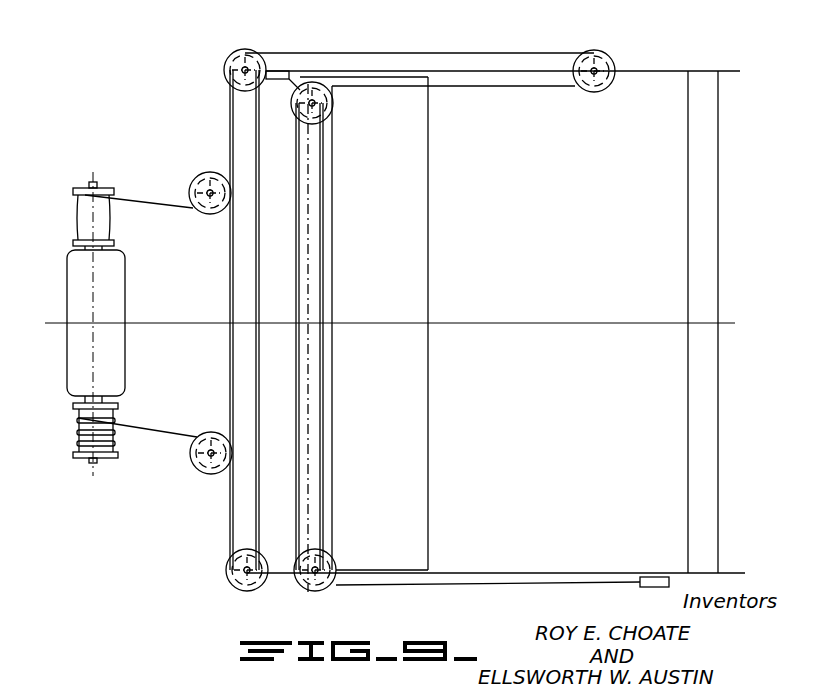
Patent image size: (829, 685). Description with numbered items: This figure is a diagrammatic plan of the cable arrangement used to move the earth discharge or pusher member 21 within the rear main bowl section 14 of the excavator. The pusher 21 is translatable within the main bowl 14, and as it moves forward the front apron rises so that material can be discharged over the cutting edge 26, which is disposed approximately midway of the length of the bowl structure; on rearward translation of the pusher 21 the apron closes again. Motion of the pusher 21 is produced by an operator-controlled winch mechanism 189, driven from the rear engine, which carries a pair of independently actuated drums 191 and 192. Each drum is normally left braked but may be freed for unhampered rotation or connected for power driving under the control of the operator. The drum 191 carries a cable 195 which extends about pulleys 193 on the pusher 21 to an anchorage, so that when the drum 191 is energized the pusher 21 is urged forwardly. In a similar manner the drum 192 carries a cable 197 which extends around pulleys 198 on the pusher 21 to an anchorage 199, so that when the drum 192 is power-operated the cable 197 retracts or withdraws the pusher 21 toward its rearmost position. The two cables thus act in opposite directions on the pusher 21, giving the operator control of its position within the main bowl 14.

The main bowl section 14 is at (674, 71).
The cutting edge 26 is at (718, 283).
The pusher member 21 is at (318, 314).
The winch mechanism 189 is at (125, 311).
The winch drum 191 is at (108, 228).
The winch drum 192 is at (116, 409).
The pulleys 193 is at (300, 108).
The cable 195 is at (146, 204).
The cable 197 is at (177, 434).
The pulleys 198 is at (334, 104).
The anchorage 199 is at (279, 71).